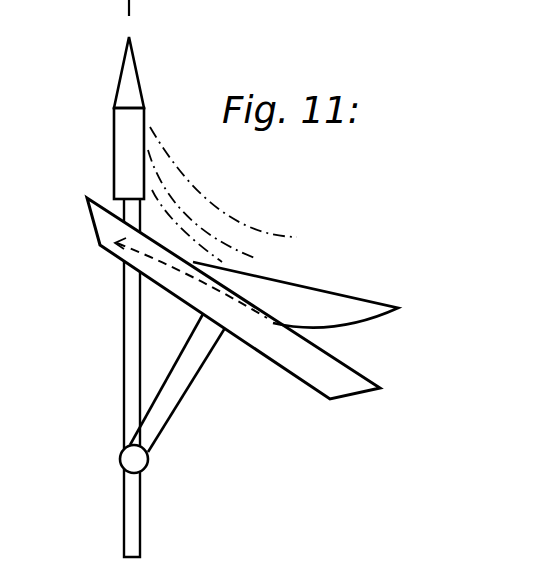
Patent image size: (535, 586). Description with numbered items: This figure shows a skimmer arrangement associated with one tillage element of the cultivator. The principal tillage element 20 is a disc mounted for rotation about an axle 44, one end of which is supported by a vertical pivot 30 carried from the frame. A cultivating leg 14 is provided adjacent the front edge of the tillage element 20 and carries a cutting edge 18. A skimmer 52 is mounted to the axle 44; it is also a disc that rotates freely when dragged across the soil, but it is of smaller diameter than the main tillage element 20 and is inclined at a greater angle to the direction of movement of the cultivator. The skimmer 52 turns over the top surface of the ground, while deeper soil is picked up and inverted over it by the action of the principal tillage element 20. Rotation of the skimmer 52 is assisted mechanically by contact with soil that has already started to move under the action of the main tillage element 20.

The cutting edge 18 is at (135, 51).
The cultivating leg 14 is at (118, 130).
The tillage element 20 is at (102, 249).
The skimmer 52 is at (295, 285).
The axle 44 is at (175, 413).
The vertical pivot 30 is at (120, 457).